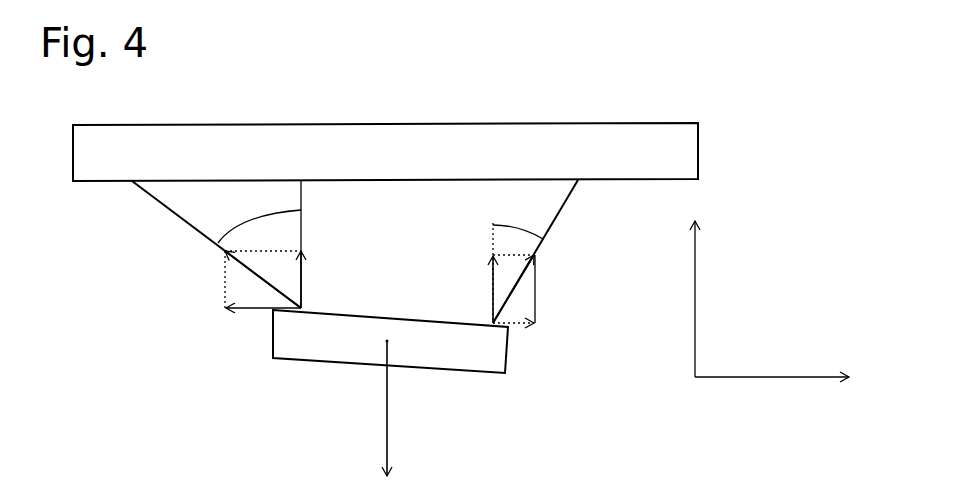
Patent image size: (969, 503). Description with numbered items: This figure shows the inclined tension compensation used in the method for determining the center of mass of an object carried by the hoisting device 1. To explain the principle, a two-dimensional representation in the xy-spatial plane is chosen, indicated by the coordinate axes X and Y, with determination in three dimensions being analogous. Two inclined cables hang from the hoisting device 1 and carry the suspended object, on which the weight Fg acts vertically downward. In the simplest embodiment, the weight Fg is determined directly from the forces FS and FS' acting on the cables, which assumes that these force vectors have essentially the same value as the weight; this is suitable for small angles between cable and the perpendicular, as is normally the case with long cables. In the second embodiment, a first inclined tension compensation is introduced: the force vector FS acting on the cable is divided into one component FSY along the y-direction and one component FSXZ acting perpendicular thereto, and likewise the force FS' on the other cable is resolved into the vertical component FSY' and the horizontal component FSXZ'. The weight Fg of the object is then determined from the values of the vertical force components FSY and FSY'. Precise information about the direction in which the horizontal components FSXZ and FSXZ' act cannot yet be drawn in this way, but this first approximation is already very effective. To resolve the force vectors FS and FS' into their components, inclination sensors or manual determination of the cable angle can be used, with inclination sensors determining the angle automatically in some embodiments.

The hoisting device 1 is at (557, 114).
The force acting on the cable FS is at (263, 279).
The vertical force component along the y-direction FSY is at (327, 280).
The horizontal force component FSXZ is at (252, 336).
The force acting on the second cable FS' is at (542, 276).
The vertical force component of second cable FSY' is at (463, 289).
The horizontal force component of second cable FSXZ' is at (538, 351).
The weight of the object Fg is at (408, 408).
The x-direction axis X is at (790, 381).
The y-direction axis Y is at (693, 281).